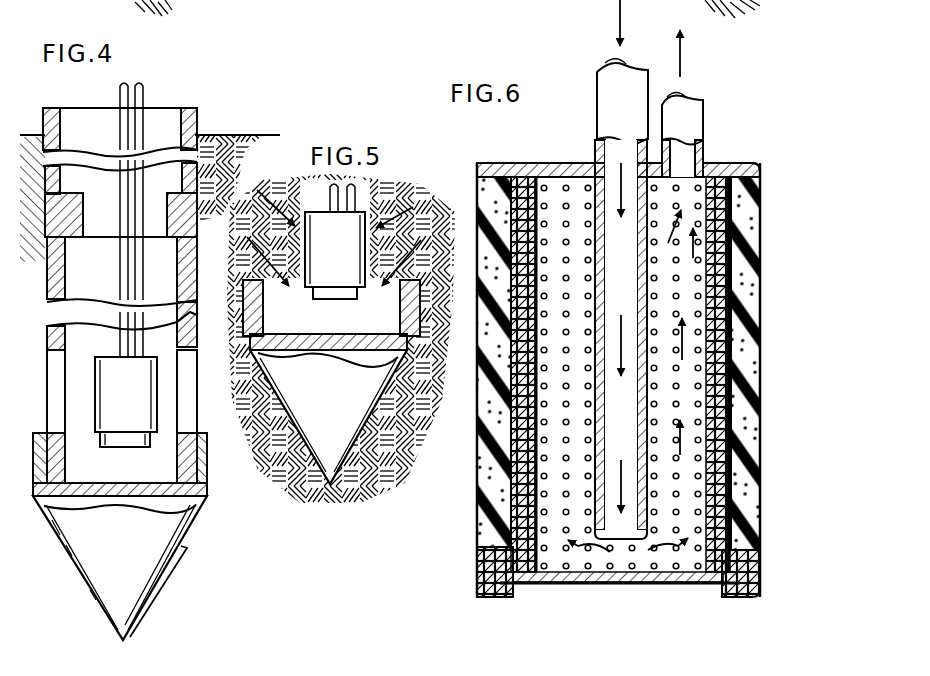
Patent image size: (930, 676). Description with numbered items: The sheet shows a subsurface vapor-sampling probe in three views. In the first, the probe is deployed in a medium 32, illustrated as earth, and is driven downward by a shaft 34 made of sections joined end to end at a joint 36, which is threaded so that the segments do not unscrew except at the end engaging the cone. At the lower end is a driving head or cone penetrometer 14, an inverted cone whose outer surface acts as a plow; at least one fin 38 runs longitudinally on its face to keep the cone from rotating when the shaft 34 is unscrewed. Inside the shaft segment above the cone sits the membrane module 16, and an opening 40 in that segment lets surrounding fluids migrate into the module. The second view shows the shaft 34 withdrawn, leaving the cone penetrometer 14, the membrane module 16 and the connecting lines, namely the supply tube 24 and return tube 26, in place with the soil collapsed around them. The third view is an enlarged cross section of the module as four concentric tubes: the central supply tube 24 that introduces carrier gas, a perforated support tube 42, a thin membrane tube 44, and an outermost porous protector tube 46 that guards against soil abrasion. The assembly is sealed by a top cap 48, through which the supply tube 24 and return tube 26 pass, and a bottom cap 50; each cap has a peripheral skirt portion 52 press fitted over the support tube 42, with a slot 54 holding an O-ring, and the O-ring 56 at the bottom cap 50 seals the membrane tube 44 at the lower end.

In FIG. 4, the cone penetrometer 14 is at (132, 556).
In FIG. 5, the cone penetrometer 14 is at (332, 396).
In FIG. 4, the membrane module 16 is at (137, 400).
In FIG. 5, the membrane module 16 is at (344, 254).
In FIG. 6, the membrane module 16 is at (616, 366).
In FIG. 4, the supply tube 24 is at (118, 88).
In FIG. 5, the supply tube 24 is at (330, 187).
In FIG. 6, the supply tube 24 is at (615, 110).
In FIG. 4, the return tube 26 is at (145, 87).
In FIG. 5, the return tube 26 is at (357, 199).
In FIG. 6, the return tube 26 is at (696, 115).
In FIG. 4, the medium 32 is at (228, 133).
In FIG. 4, the shaft 34 is at (197, 337).
In FIG. 4, the joint 36 is at (205, 462).
In FIG. 5, the joint 36 is at (331, 315).
In FIG. 4, the fin 38 is at (177, 573).
In FIG. 4, the opening 40 is at (194, 395).
In FIG. 6, the support tube 42 is at (738, 160).
In FIG. 6, the membrane tube 44 is at (757, 329).
In FIG. 6, the protector tube 46 is at (760, 355).
In FIG. 6, the top cap 48 is at (720, 164).
In FIG. 6, the bottom cap 50 is at (655, 575).
In FIG. 6, the peripheral skirt portion 52 is at (758, 203).
In FIG. 6, the slot 54 is at (757, 190).
In FIG. 6, the O-ring 56 is at (502, 163).